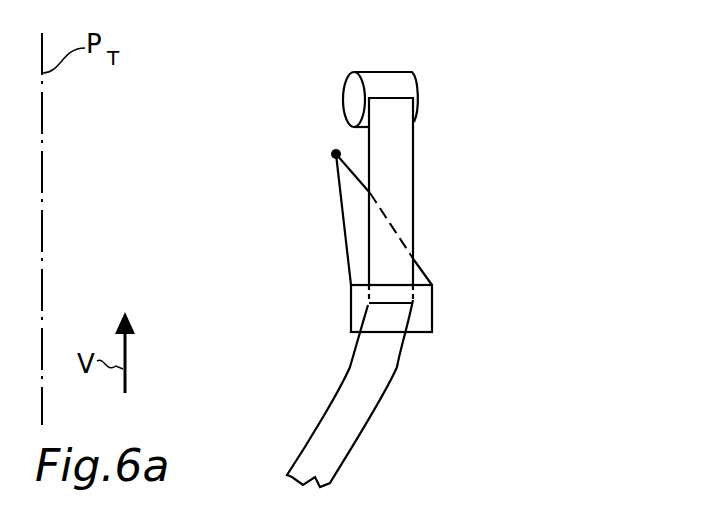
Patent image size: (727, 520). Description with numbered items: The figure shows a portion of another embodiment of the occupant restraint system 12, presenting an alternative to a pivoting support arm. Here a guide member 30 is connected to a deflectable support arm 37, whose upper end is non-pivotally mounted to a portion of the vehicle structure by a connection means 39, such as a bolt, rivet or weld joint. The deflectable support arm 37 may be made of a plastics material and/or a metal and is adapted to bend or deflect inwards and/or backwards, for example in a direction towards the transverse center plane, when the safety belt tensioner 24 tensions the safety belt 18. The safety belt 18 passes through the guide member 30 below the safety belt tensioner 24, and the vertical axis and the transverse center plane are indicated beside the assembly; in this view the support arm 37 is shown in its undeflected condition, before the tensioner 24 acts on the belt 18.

The occupant restraint system 12 is at (518, 122).
The safety belt 18 is at (338, 432).
The safety belt tensioner 24 is at (352, 94).
The guide member 30 is at (357, 304).
The deflectable support arm 37 is at (360, 217).
The connection means 39 is at (331, 160).